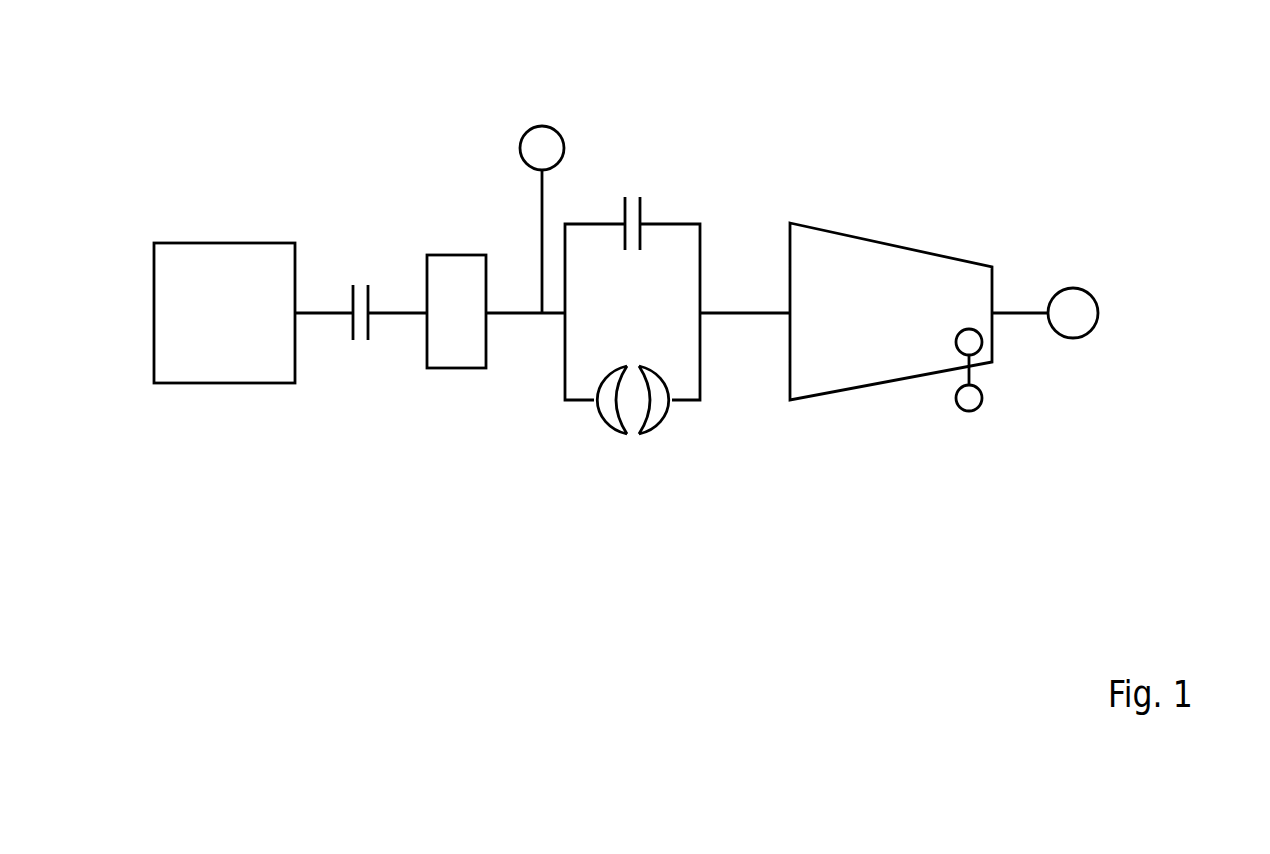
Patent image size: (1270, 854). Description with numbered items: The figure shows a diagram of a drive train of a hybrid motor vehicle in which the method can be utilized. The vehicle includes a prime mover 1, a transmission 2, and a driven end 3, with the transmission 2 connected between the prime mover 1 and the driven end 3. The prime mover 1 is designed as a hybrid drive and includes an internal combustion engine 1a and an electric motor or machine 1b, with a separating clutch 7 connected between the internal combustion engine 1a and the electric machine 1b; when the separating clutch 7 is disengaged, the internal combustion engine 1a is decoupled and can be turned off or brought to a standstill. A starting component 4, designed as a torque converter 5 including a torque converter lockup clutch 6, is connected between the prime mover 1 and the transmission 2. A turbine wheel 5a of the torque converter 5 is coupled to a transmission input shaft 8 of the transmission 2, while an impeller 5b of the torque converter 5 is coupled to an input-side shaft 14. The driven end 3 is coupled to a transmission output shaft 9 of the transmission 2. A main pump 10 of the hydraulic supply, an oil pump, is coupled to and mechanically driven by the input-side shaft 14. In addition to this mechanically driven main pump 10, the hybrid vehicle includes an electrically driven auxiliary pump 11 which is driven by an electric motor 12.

The prime mover 1 is at (505, 610).
The internal combustion engine 1a is at (245, 362).
The electric machine 1b is at (465, 280).
The separating clutch 7 is at (357, 352).
The input-side shaft 14 is at (513, 315).
The main pump 10 is at (553, 147).
The starting component 4 is at (715, 610).
The torque converter lockup clutch 6 is at (636, 190).
The torque converter 5 is at (584, 465).
The turbine wheel 5a is at (658, 403).
The impeller 5b is at (607, 405).
The transmission input shaft 8 is at (745, 315).
The transmission 2 is at (845, 265).
The transmission output shaft 9 is at (1020, 310).
The driven end 3 is at (1073, 312).
The auxiliary pump 11 is at (968, 343).
The electric motor 12 is at (970, 398).